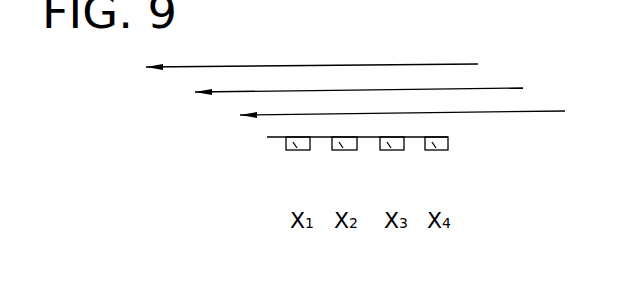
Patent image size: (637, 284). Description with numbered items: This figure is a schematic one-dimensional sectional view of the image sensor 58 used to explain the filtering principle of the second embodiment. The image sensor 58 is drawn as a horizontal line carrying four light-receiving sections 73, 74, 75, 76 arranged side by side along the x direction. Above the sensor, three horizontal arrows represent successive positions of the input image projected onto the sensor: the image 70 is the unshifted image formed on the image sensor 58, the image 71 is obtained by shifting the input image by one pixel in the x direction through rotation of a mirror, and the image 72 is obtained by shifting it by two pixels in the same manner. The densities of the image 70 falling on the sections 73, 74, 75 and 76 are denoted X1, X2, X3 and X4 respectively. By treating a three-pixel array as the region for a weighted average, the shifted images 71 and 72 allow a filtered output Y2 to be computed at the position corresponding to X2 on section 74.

The image 72 is at (175, 68).
The image 71 is at (222, 93).
The image 70 is at (265, 116).
The image sensor 58 is at (453, 141).
The light-receiving section 73 is at (298, 152).
The light-receiving section 74 is at (350, 152).
The light-receiving section 75 is at (393, 152).
The light-receiving section 76 is at (440, 152).